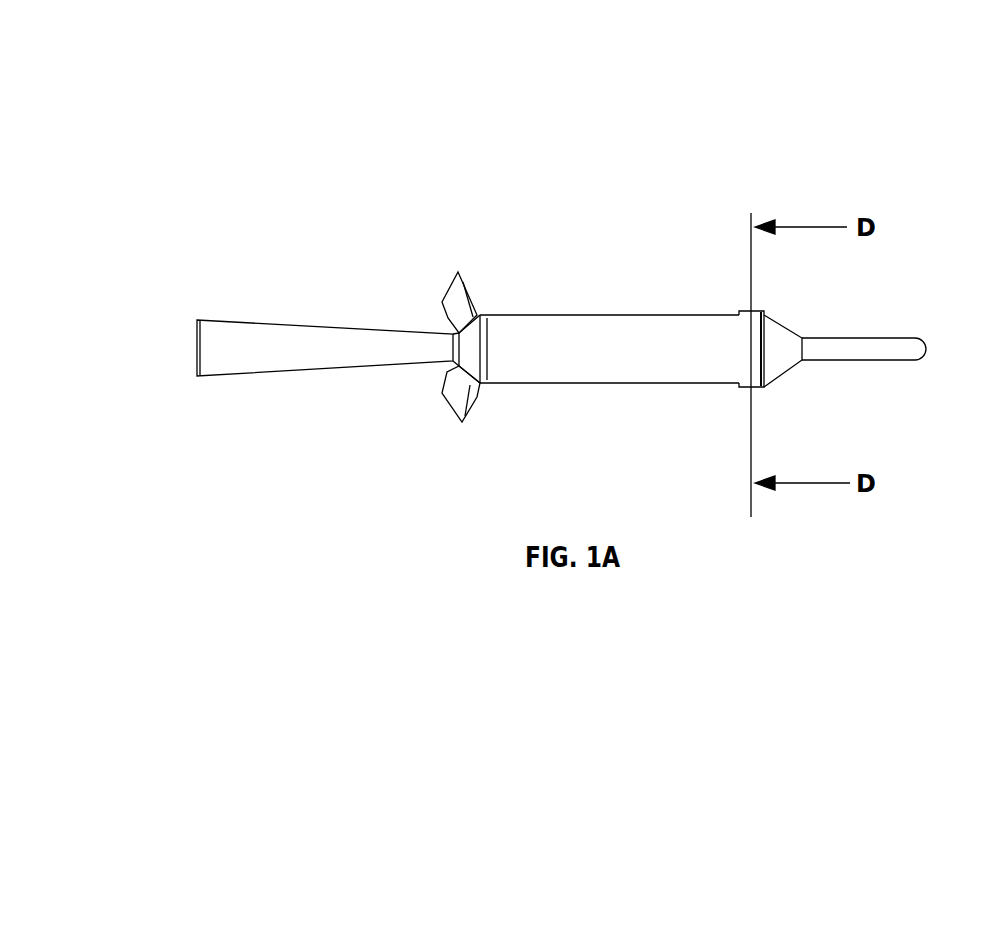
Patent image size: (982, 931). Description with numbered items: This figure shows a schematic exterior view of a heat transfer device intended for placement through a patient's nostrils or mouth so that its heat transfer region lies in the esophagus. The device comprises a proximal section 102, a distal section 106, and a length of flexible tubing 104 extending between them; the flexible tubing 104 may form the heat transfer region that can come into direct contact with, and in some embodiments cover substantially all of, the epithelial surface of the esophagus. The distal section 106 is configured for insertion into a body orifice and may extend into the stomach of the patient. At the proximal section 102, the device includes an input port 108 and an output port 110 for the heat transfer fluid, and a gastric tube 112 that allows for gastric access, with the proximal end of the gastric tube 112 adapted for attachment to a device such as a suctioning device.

The proximal section 102 is at (166, 205).
The length of flexible tubing 104 is at (480, 205).
The distal section 106 is at (758, 205).
The input port 108 is at (448, 402).
The output port 110 is at (447, 282).
The gastric tube 112 is at (322, 367).